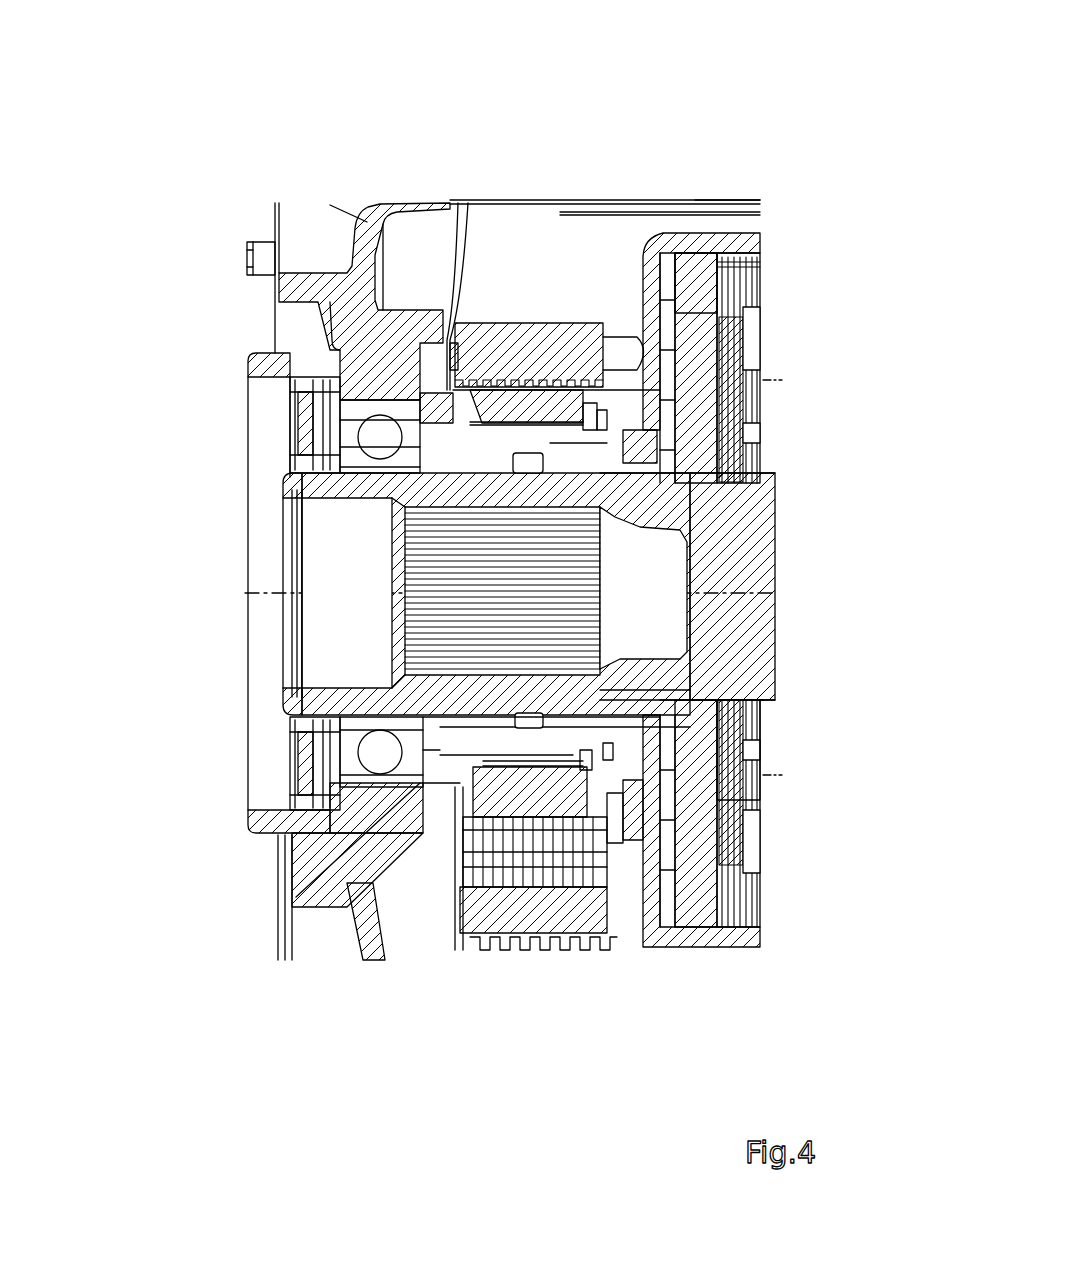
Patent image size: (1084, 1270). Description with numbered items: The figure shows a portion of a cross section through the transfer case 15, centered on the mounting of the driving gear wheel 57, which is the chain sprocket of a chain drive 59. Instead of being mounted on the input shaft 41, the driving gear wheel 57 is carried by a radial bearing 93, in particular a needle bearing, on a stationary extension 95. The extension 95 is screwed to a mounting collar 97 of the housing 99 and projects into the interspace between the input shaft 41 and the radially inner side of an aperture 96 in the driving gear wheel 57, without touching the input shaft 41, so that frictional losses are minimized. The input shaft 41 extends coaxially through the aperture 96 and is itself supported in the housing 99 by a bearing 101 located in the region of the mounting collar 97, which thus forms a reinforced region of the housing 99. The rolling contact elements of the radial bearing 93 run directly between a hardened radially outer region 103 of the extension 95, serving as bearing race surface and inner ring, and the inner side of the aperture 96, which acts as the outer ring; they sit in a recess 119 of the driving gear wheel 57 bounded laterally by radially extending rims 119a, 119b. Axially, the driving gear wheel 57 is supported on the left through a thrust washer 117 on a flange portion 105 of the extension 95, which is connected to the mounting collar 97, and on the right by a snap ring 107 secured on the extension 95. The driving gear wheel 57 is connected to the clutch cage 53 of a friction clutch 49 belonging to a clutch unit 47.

The transfer case 15 is at (295, 115).
The input shaft 41 is at (317, 705).
The clutch unit 47 is at (810, 135).
The friction clutch 49 is at (808, 283).
The clutch cage 53 is at (735, 240).
The driving gear wheel 57 is at (520, 745).
The chain drive 59 is at (447, 965).
The radial bearing 93 is at (521, 403).
The extension 95 is at (748, 443).
The aperture 96 is at (580, 470).
The mounting collar 97 is at (383, 372).
The housing 99 is at (343, 880).
The bearing 101 is at (333, 440).
The radially outer region / bearing race surface 103 is at (747, 385).
The flange portion 105 is at (515, 947).
The snap ring 107 is at (618, 420).
The thrust washer 117 is at (468, 330).
The recess 119 is at (752, 748).
The rim 119a is at (483, 750).
The rim 119b is at (592, 743).